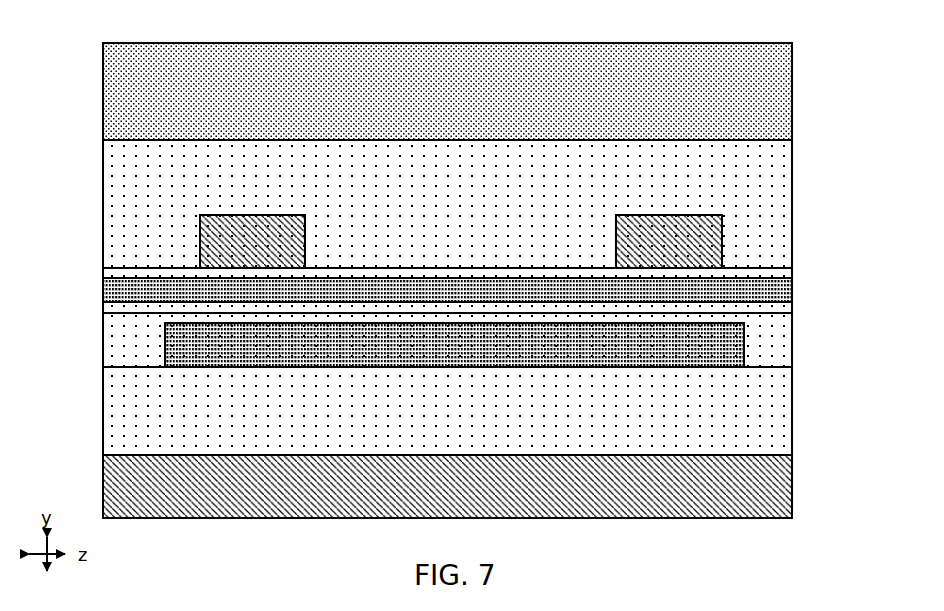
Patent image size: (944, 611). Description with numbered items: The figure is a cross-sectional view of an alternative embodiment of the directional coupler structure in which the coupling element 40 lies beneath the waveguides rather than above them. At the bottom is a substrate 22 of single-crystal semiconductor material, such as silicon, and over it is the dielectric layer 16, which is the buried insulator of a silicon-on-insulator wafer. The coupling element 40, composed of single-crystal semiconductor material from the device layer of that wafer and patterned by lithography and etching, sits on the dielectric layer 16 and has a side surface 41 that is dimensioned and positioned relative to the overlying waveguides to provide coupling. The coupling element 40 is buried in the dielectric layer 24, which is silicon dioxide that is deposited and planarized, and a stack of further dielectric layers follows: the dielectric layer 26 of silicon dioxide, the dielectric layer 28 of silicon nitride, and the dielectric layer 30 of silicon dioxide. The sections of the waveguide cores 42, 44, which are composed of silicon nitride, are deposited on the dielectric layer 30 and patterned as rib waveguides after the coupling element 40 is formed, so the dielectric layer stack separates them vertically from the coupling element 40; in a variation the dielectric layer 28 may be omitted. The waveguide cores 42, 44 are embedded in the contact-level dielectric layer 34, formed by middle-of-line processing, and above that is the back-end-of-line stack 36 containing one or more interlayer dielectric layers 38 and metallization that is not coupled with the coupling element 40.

The dielectric layer 16 is at (773, 425).
The substrate 22 is at (773, 484).
The dielectric layer 24 is at (770, 355).
The dielectric layer 26 is at (195, 308).
The dielectric layer 28 is at (705, 295).
The dielectric layer 30 is at (158, 275).
The dielectric layer 34 is at (133, 190).
The back-end-of-line stack 36 is at (796, 100).
The interlayer dielectric layer 38 is at (130, 103).
The coupling element 40 is at (697, 354).
The side surface 41 is at (165, 355).
The waveguide core 42 is at (222, 240).
The waveguide core 44 is at (690, 245).